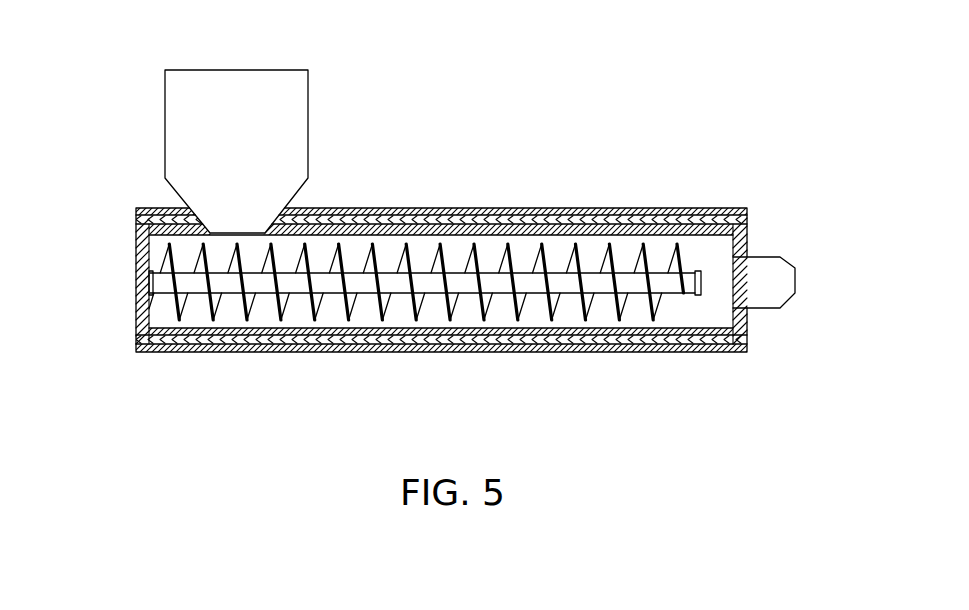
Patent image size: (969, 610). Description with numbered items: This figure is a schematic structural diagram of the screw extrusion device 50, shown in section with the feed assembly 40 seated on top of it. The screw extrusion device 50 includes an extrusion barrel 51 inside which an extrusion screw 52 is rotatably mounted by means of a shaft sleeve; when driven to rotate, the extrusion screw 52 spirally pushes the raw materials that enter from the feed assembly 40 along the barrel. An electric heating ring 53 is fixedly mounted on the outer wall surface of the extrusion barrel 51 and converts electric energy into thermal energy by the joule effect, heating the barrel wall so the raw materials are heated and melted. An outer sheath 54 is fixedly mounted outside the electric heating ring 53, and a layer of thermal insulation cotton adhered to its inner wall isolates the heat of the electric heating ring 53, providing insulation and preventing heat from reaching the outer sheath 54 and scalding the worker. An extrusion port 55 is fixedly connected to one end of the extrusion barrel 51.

The feed assembly 40 is at (165, 147).
The screw extrusion device 50 is at (137, 320).
The extrusion barrel 51 is at (137, 243).
The extrusion screw 52 is at (470, 255).
The electric heating ring 53 is at (568, 209).
The outer sheath 54 is at (683, 208).
The extrusion port 55 is at (760, 283).